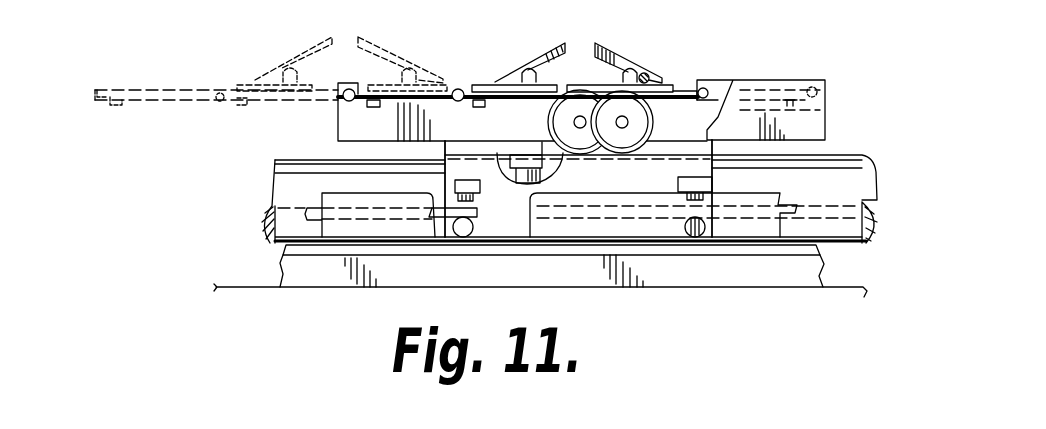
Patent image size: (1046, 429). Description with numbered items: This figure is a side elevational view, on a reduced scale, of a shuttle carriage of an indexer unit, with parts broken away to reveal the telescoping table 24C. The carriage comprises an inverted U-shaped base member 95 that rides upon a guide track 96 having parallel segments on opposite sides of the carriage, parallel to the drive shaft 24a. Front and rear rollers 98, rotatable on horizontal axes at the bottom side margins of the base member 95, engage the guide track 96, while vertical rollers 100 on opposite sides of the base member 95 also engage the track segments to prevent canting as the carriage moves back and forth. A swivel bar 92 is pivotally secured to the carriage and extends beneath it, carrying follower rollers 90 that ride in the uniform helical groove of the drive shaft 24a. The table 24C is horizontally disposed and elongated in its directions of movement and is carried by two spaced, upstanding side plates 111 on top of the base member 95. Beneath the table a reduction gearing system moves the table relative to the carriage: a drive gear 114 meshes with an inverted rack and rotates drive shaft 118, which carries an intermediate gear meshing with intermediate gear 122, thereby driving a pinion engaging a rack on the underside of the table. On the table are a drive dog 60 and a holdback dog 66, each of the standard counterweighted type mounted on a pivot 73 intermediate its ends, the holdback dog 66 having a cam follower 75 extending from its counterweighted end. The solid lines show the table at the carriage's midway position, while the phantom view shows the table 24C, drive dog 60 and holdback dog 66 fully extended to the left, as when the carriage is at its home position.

The telescoping table 24C is at (158, 86).
The drive shaft 24a is at (865, 184).
The drive dog 60 is at (294, 52).
The holdback dog 66 is at (391, 52).
The pivot 73 is at (532, 72).
The cam follower 75 is at (647, 74).
The follower rollers 90 is at (555, 172).
The swivel bar 92 is at (518, 155).
The base member 95 is at (440, 156).
The guide track 96 is at (598, 245).
The front and rear rollers 98 is at (463, 237).
The vertical rollers 100 is at (455, 187).
The side plates 111 is at (815, 120).
The drive gear 114 is at (640, 110).
The drive shaft 118 is at (628, 123).
The intermediate gear 122 is at (555, 119).